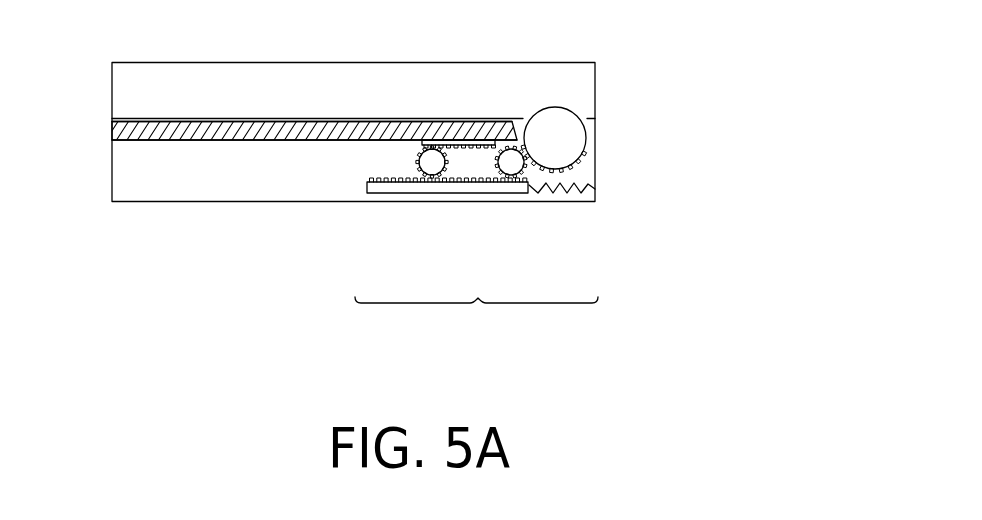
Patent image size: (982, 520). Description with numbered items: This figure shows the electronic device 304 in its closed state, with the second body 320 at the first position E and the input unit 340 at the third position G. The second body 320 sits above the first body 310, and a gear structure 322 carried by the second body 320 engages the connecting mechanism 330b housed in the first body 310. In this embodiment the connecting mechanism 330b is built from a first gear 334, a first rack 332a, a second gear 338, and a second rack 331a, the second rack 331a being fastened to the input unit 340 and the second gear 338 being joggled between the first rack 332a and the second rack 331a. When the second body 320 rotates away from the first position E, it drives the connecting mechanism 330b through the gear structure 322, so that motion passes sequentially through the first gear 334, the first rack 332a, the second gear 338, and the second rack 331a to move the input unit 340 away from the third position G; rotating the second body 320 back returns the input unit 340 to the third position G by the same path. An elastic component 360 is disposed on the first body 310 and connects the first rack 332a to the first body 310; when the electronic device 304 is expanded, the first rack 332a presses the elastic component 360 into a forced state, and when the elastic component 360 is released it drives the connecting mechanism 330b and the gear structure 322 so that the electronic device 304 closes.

The electronic device 304 is at (821, 353).
The first body 310 is at (182, 203).
The second body 320 is at (148, 62).
The gear structure 322 is at (583, 165).
The connecting mechanism 330b is at (476, 326).
The second rack 331a is at (472, 149).
The first rack 332a is at (390, 193).
The first gear 334 is at (511, 163).
The second gear 338 is at (432, 163).
The input unit 340 is at (292, 141).
The elastic component 360 is at (577, 192).
The first position E is at (298, 63).
The third position G is at (112, 132).